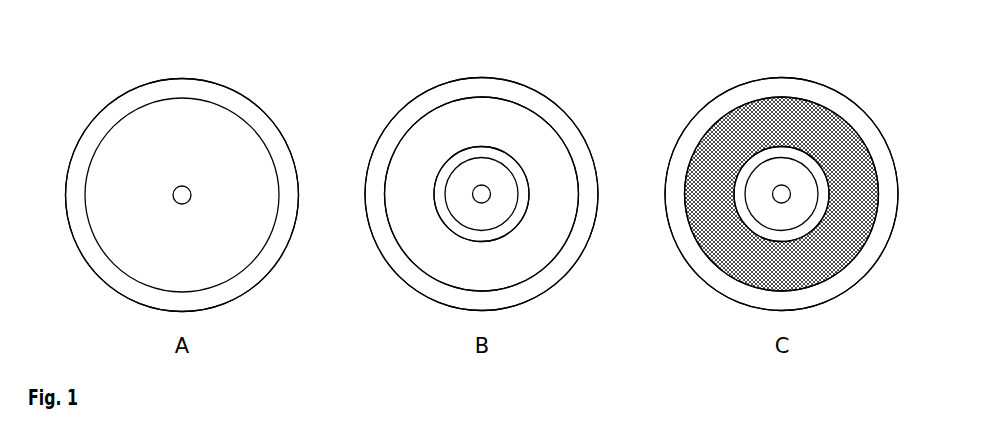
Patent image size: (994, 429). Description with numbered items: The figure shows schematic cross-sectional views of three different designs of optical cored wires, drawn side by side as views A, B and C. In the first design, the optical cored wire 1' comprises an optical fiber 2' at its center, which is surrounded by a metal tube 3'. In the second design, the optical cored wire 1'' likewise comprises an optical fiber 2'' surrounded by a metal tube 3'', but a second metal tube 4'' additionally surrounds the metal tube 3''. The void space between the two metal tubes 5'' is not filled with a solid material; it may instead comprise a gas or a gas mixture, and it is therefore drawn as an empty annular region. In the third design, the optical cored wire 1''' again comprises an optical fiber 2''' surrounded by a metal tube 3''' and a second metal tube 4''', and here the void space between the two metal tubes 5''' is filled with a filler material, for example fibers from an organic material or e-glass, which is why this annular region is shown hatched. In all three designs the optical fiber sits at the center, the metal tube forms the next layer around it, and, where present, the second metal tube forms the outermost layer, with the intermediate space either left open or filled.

The optical cored wire 1' is at (172, 184).
The optical fiber 2' is at (250, 143).
The metal tube 3' is at (206, 195).
The optical cored wire 1'' is at (464, 178).
The optical fiber 2'' is at (551, 141).
The metal tube 3'' is at (433, 215).
The second metal tube 4'' is at (507, 194).
The void space between the two metal tubes 5'' is at (458, 209).
The optical cored wire 1''' is at (764, 178).
The optical fiber 2''' is at (855, 141).
The metal tube 3''' is at (733, 215).
The second metal tube 4''' is at (811, 194).
The void space between the two metal tubes 5''' is at (758, 209).